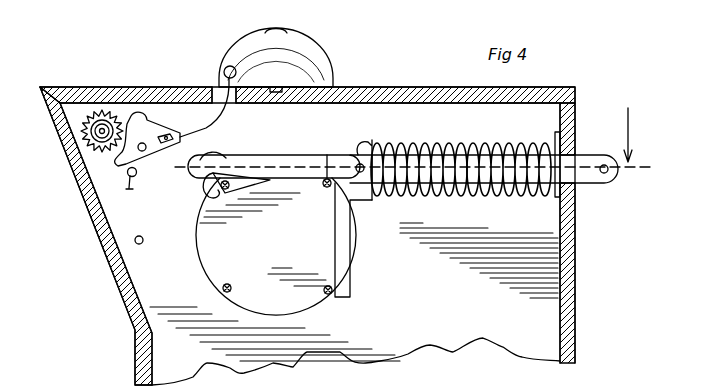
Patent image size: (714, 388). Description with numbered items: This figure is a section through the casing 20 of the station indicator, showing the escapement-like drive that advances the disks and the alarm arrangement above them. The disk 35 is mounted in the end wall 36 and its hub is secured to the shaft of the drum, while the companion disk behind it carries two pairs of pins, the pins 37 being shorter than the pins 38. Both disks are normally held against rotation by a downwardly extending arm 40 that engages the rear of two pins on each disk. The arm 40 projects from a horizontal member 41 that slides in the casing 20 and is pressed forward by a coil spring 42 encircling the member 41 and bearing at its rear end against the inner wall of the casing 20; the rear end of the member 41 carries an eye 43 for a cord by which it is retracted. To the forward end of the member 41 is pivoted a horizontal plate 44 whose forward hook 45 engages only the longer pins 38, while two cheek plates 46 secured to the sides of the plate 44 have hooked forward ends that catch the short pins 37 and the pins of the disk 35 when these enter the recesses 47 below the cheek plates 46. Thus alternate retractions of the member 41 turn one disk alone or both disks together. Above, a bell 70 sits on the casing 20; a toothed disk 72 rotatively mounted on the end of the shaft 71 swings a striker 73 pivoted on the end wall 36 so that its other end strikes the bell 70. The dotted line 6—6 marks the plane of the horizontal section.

The dotted line 6— 6 is at (410, 142).
The casing 20 is at (575, 297).
The disk 35 is at (276, 246).
The end wall 36 is at (148, 272).
The pins 37 is at (228, 193).
The pins 38 is at (323, 184).
The downwardly extending arm 40 is at (352, 266).
The horizontal member 41 is at (410, 146).
The coil spring 42 is at (470, 137).
The eye 43 is at (608, 172).
The horizontal plate 44 is at (270, 160).
The hook 45 is at (205, 215).
The cheek plates 46 is at (218, 178).
The recesses 47 is at (243, 186).
The bell 70 is at (256, 82).
The shaft 71 is at (84, 135).
The disk 72 is at (108, 158).
The striker 73 is at (147, 135).